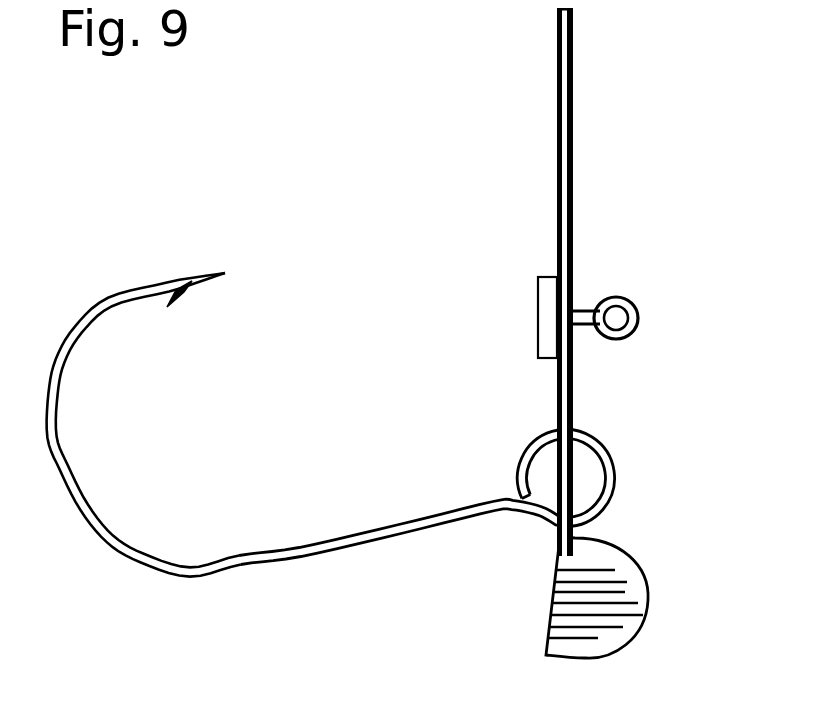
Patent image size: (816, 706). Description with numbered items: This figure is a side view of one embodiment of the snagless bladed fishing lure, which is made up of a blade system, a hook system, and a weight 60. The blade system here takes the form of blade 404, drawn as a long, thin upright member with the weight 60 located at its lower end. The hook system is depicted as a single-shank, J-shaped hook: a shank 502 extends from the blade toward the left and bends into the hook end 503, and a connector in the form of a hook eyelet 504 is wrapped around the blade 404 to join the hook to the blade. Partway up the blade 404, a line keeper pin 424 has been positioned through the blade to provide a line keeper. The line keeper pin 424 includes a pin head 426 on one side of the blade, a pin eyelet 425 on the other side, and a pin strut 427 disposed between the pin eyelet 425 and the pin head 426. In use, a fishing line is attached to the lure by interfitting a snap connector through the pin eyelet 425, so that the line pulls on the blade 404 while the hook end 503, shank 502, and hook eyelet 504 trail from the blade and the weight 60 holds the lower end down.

The blade 404 is at (562, 122).
The pin strut 427 is at (578, 312).
The pin eyelet 425 is at (637, 307).
The pin head 426 is at (548, 320).
The line keeper pin 424 is at (628, 335).
The hook end 503 is at (57, 392).
The shank 502 is at (287, 553).
The hook eyelet 504 is at (530, 452).
The weight 60 is at (570, 565).